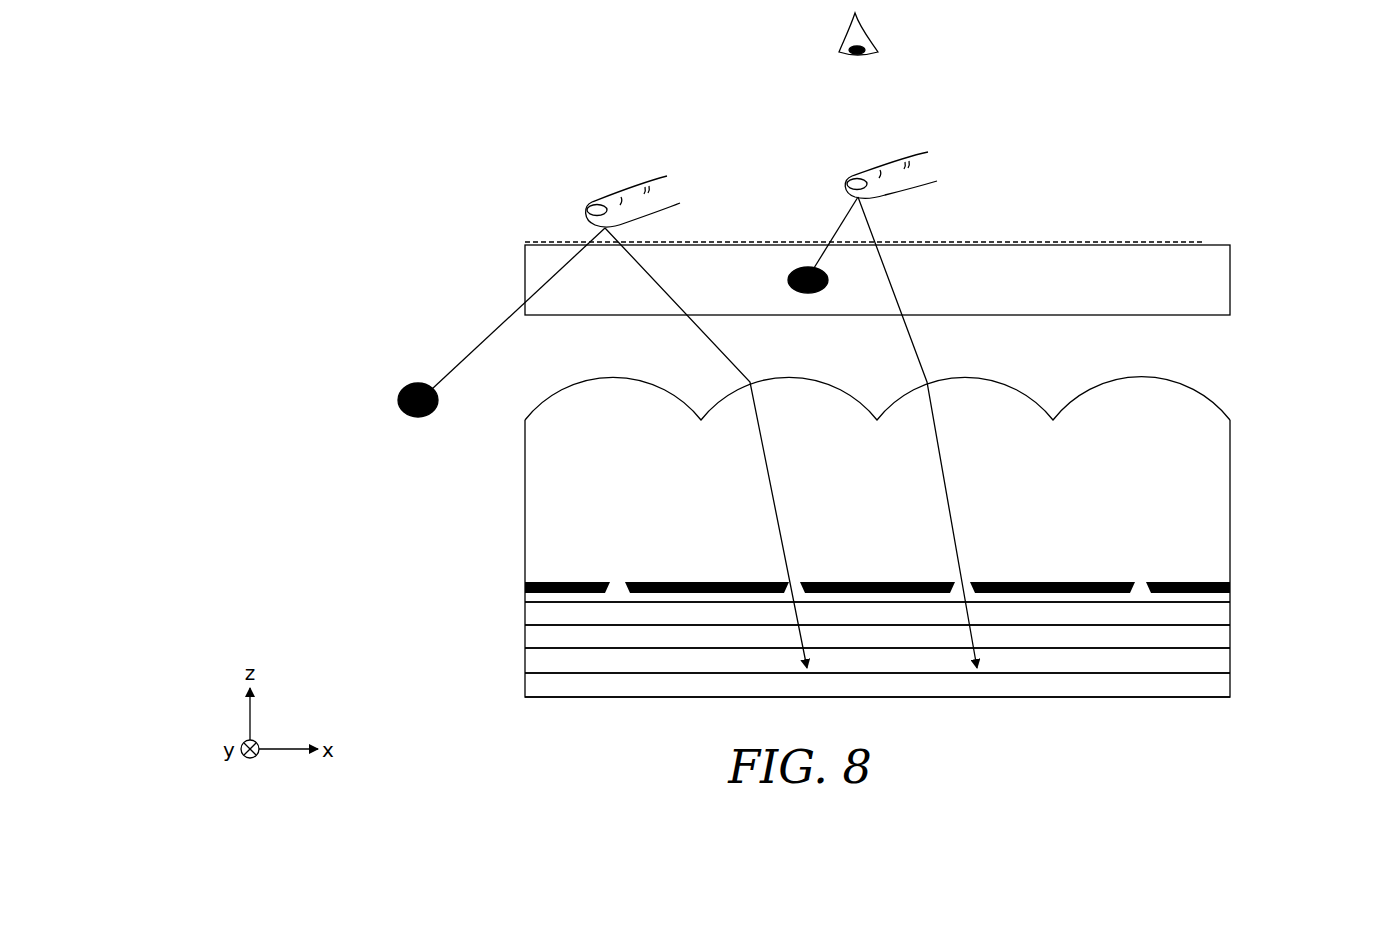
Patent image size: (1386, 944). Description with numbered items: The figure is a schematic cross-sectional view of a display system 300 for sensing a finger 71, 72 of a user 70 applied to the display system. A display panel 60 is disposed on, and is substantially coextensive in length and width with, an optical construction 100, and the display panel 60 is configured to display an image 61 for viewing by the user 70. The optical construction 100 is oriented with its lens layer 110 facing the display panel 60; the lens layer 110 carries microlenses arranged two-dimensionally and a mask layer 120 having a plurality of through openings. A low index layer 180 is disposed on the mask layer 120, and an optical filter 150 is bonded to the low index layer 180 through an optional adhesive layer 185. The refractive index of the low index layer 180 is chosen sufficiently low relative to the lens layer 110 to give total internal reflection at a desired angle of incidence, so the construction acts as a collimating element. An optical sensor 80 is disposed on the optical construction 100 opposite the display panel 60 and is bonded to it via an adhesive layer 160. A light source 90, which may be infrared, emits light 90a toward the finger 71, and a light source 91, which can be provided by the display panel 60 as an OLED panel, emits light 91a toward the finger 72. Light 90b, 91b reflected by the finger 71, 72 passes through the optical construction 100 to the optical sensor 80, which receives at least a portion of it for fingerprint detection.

The display system 300 is at (212, 122).
The user 70 is at (880, 28).
The finger 71 is at (622, 197).
The finger 72 is at (885, 170).
The display panel 60 is at (1215, 264).
The image 61 is at (1165, 240).
The optical construction 100 is at (1232, 507).
The lens layer 110 is at (1205, 390).
The mask layer 120 is at (522, 585).
The low index layer 180 is at (522, 597).
The adhesive layer 185 is at (1212, 617).
The optical filter 150 is at (1220, 640).
The adhesive layer 160 is at (1220, 663).
The optical sensor 80 is at (1222, 688).
The light source 90 is at (403, 382).
The light 90a is at (450, 372).
The reflected light 90b is at (697, 327).
The light source 91 is at (787, 278).
The light 91a is at (838, 228).
The reflected light 91b is at (902, 323).